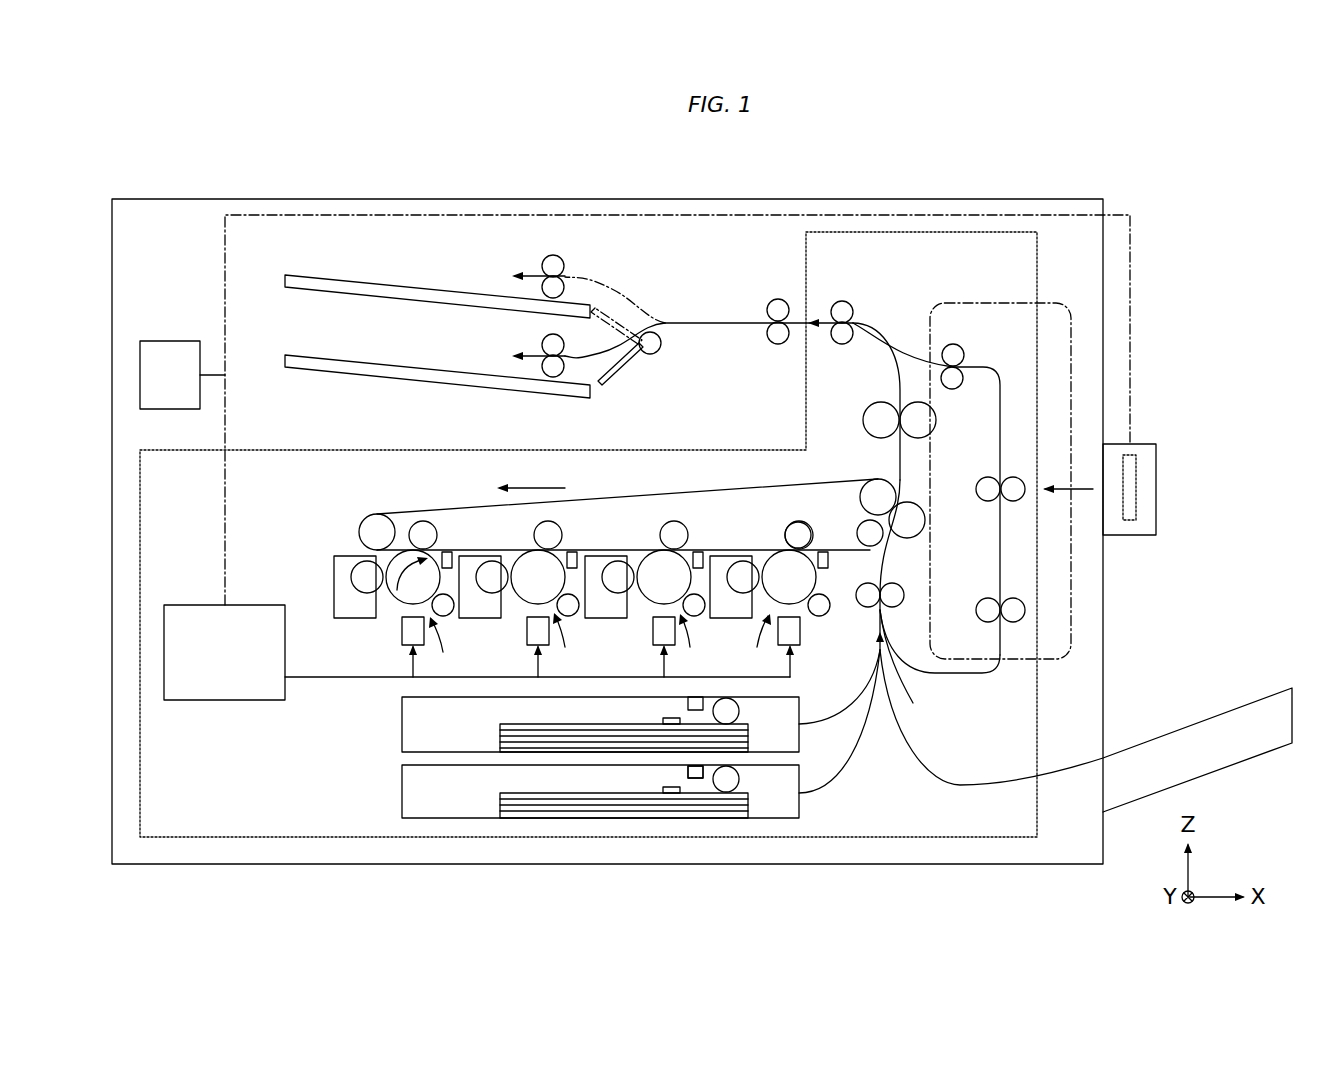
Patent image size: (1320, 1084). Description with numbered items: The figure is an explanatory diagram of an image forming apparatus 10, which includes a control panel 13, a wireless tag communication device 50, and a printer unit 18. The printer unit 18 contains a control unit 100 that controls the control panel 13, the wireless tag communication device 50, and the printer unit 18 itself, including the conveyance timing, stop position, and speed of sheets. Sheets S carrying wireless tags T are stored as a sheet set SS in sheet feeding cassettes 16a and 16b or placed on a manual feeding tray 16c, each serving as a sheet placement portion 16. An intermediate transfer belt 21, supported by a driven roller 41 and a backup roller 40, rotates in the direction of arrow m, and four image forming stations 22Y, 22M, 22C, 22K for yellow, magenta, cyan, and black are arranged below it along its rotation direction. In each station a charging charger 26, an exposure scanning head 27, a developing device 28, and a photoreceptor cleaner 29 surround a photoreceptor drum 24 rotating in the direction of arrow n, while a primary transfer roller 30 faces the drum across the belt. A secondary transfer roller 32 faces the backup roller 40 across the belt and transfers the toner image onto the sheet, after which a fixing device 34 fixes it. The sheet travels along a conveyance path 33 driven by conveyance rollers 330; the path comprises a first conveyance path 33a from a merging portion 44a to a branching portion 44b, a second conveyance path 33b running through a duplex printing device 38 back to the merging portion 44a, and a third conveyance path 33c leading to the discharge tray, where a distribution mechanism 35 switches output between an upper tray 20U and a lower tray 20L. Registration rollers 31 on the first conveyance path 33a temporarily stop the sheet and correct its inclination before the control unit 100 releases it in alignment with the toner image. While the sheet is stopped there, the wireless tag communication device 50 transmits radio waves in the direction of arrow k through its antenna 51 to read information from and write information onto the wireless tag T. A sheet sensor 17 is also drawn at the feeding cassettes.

The image forming apparatus 10 is at (262, 186).
The control panel 13 is at (172, 341).
The printer unit 18 is at (180, 449).
The upper tray 20U is at (408, 283).
The lower tray 20L is at (408, 363).
The distribution mechanism 35 is at (633, 365).
The third conveyance path 33c is at (802, 320).
The branching portion 44b is at (877, 338).
The second conveyance path 33b is at (910, 357).
The duplex printing device 38 is at (1045, 302).
The fixing device 34 is at (890, 395).
The first conveyance path 33a is at (898, 458).
The intermediate transfer belt 21 is at (680, 493).
The driven roller 41 is at (367, 518).
The backup roller 40 is at (860, 497).
The secondary transfer roller 32 is at (907, 540).
The arrow m is at (532, 488).
The conveyance rollers 330 is at (985, 502).
The arrow k is at (1068, 479).
The registration rollers 31 is at (905, 595).
The merging portion 44a is at (907, 670).
The conveyance path 33 is at (945, 690).
The manual feeding tray 16c is at (1180, 728).
The wireless tag communication device 50 is at (1137, 444).
The antenna 51 is at (1137, 487).
The control unit 100 is at (222, 700).
The photoreceptor drum 24 is at (388, 560).
The arrow n is at (393, 583).
The developing device 28 is at (334, 573).
The photoreceptor cleaner 29 is at (447, 552).
The charging charger 26 is at (452, 614).
The primary transfer roller 30 is at (423, 520).
The exposure scanning head 27 is at (400, 636).
The image forming station 22Y is at (454, 644).
The image forming station 22M is at (579, 642).
The image forming station 22C is at (701, 643).
The image forming station 22K is at (758, 643).
The sheet placement portion 16 is at (583, 787).
The sheet feeding cassette 16a is at (402, 721).
The sheet feeding cassette 16b is at (402, 789).
The sheet set SS is at (495, 812).
The sheet S is at (577, 797).
The wireless tag T is at (676, 792).
The sheet sensor 17 is at (697, 780).